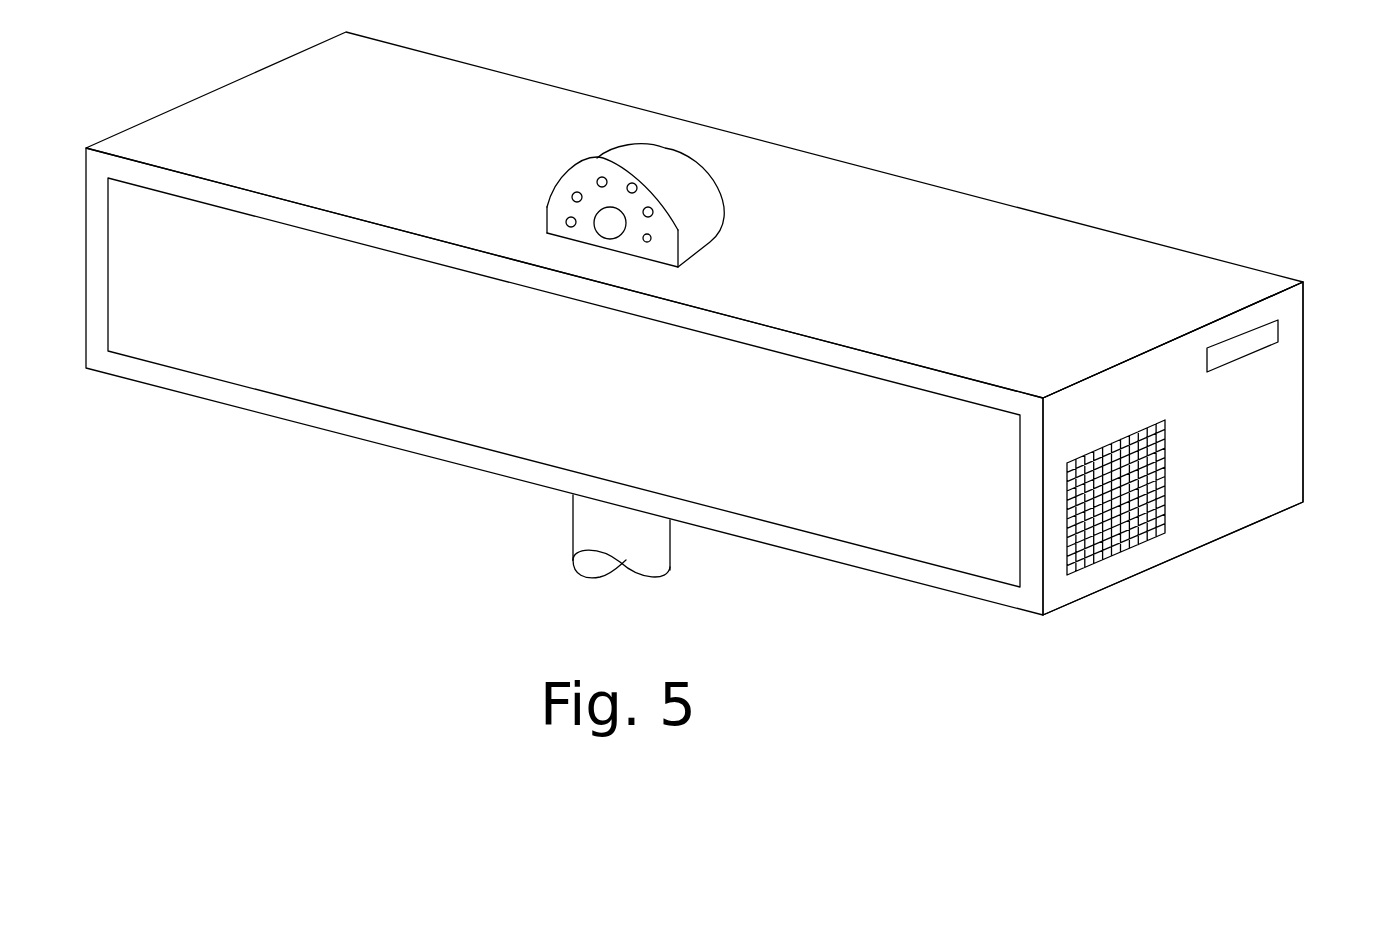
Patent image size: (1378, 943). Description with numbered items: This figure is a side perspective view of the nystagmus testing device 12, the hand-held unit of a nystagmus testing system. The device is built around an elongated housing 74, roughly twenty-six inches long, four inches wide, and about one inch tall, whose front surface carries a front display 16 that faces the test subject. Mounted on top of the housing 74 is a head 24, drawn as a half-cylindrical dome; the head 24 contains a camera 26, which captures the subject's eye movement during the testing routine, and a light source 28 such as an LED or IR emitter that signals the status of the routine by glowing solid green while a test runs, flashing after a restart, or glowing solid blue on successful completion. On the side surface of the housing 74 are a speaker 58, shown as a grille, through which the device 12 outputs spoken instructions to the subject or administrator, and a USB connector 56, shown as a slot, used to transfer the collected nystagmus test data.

The nystagmus testing device 12 is at (1225, 173).
The front display 16 is at (182, 333).
The head 24 is at (662, 157).
The camera 26 is at (602, 207).
The light source 28 is at (650, 235).
The USB connector 56 is at (1252, 345).
The speaker 58 is at (1154, 484).
The housing 74 is at (1290, 466).